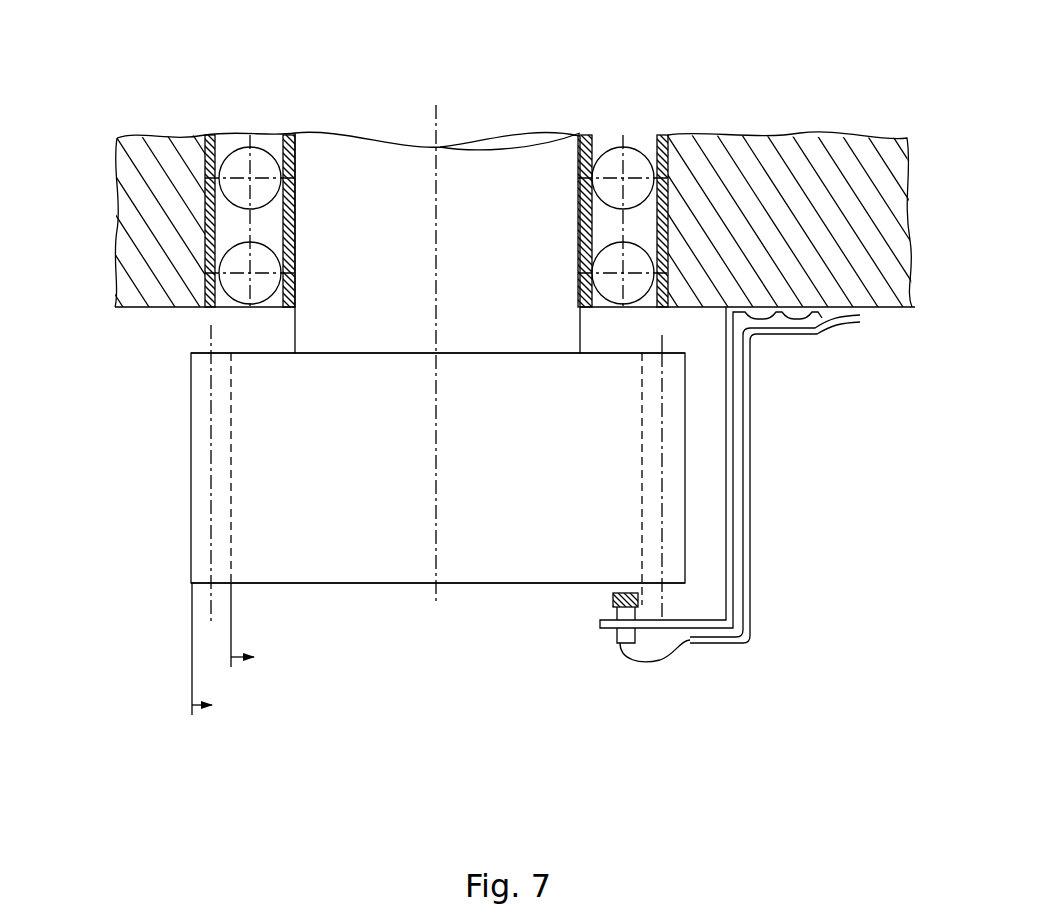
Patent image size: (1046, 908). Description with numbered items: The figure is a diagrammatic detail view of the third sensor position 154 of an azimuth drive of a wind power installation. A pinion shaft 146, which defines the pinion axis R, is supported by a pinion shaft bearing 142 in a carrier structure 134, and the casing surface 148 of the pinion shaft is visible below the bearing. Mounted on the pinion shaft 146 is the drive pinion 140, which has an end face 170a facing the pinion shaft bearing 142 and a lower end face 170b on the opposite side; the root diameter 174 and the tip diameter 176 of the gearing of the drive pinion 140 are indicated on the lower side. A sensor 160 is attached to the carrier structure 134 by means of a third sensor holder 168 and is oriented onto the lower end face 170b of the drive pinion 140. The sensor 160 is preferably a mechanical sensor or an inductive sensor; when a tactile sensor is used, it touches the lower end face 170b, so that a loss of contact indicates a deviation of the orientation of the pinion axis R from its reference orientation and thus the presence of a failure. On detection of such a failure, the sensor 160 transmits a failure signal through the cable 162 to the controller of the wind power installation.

The carrier structure 134 is at (765, 155).
The pinion shaft bearing 142 is at (630, 118).
The pinion shaft 146 is at (500, 182).
The pinion axis R is at (435, 208).
The casing surface of pinion shaft 148 is at (290, 322).
The drive pinion 140 is at (295, 470).
The end face of drive pinion 170a is at (268, 360).
The lower end face of drive pinion 170b is at (278, 583).
The third sensor position 154 is at (600, 594).
The sensor 160 is at (608, 602).
The cable from sensor to installation controller 162 is at (750, 535).
The sensor holder for third sensor position 168 is at (690, 623).
The root diameter of gearing 174 is at (243, 664).
The tip diameter of gearing 176 is at (203, 712).